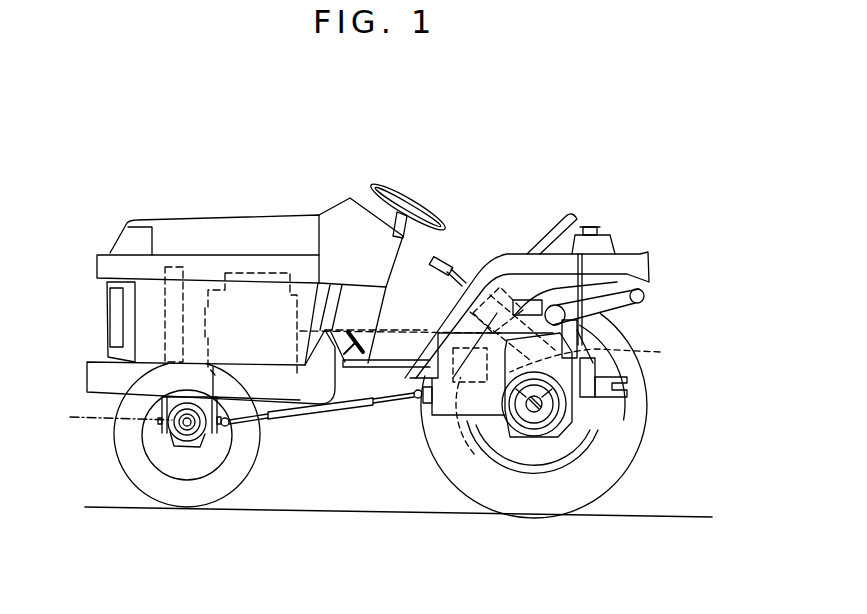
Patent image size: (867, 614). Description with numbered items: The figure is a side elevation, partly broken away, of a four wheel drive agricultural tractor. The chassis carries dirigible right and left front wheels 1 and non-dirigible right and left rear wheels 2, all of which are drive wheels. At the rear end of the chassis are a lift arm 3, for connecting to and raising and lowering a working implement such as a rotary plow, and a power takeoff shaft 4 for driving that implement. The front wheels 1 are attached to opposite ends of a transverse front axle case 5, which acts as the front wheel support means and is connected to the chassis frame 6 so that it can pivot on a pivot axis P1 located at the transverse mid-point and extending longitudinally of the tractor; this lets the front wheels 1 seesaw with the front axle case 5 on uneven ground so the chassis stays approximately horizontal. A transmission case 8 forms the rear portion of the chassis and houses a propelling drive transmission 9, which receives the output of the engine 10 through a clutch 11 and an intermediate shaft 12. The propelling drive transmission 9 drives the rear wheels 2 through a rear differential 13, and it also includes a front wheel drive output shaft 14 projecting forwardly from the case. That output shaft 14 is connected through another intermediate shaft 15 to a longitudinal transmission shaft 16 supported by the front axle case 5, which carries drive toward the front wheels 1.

The front wheels 1 is at (197, 495).
The rear wheels 2 is at (547, 503).
The lift arm 3 is at (632, 313).
The power takeoff shaft 4 is at (605, 372).
The front axle case 5 is at (181, 438).
The chassis frame 6 is at (87, 372).
The transmission case 8 is at (447, 410).
The propelling drive transmission 9 is at (460, 413).
The engine 10 is at (257, 273).
The clutch 11 is at (297, 407).
The intermediate shaft 12 is at (400, 343).
The rear differential 13 is at (600, 356).
The front wheel drive output shaft 14 is at (423, 400).
The intermediate shaft 15 is at (343, 407).
The transmission shaft 16 is at (220, 432).
The pivot axis P1 is at (102, 420).